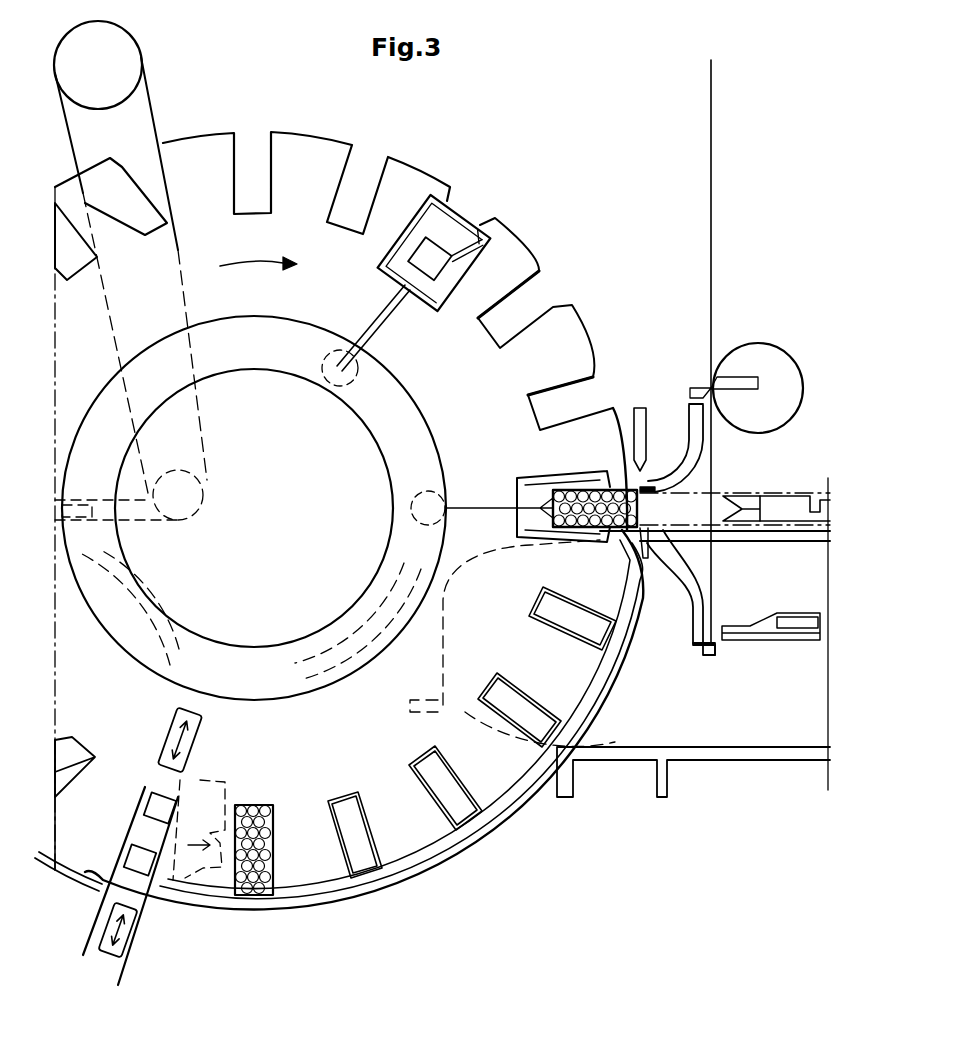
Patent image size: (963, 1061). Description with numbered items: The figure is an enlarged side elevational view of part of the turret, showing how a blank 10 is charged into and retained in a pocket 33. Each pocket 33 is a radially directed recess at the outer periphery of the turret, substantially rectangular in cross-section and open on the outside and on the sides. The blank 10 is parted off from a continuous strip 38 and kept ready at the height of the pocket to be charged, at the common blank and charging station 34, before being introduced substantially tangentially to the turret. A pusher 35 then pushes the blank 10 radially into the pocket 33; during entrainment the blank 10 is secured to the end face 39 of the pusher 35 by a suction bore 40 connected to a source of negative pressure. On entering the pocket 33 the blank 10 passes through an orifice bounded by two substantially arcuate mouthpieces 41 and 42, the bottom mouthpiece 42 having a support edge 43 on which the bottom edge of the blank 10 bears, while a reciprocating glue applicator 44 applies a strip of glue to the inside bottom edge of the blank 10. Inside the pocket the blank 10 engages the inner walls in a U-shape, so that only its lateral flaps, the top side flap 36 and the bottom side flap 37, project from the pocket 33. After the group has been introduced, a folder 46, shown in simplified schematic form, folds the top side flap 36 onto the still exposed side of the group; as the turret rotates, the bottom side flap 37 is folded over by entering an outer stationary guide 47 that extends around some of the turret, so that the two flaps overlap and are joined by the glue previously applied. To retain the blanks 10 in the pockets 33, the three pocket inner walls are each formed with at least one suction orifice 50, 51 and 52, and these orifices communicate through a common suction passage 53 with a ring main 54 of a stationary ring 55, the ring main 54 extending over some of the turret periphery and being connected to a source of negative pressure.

The blank 10 is at (712, 450).
The pocket 33 is at (543, 292).
The blank and charging station 34 is at (745, 278).
The pusher 35 is at (812, 494).
The top side flap 36 is at (650, 477).
The bottom side flap 37 is at (652, 534).
The continuous strip 38 is at (713, 129).
The end face 39 is at (722, 527).
The suction bore 40 is at (743, 497).
The top mouthpiece 41 is at (682, 453).
The bottom mouthpiece 42 is at (695, 604).
The support edge 43 is at (717, 646).
The glue applicator 44 is at (822, 608).
The folder 46 is at (637, 412).
The outer stationary guide 47 is at (498, 815).
The suction orifice 50 is at (443, 202).
The suction orifice 51 is at (473, 233).
The suction orifice 52 is at (428, 284).
The common suction passage 53 is at (385, 327).
The ring main 54 is at (384, 436).
The stationary ring 55 is at (252, 371).